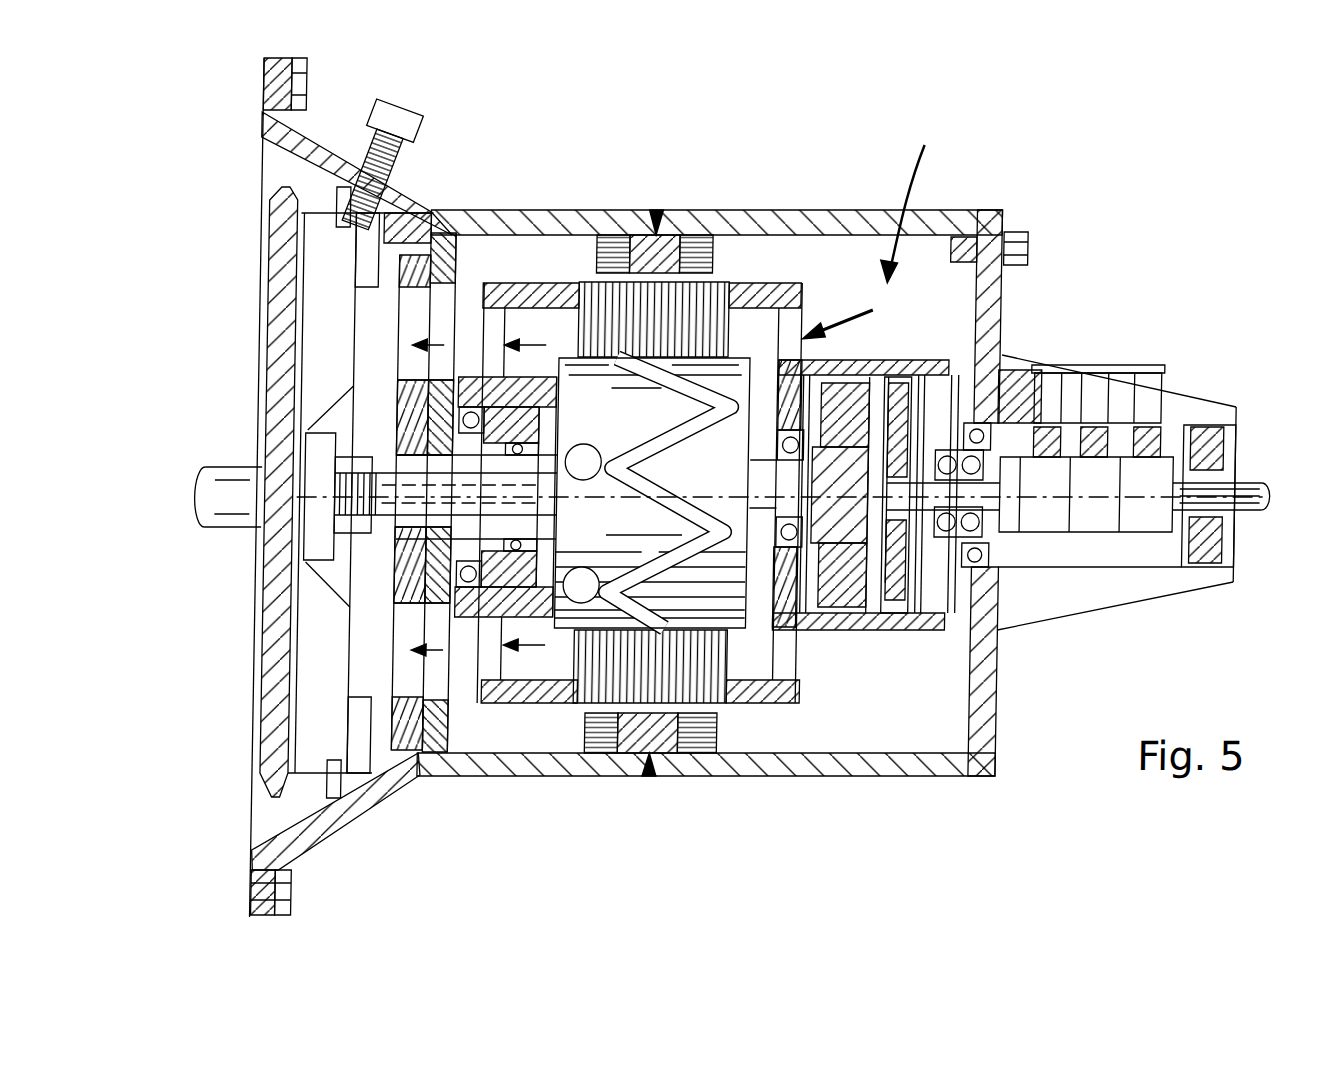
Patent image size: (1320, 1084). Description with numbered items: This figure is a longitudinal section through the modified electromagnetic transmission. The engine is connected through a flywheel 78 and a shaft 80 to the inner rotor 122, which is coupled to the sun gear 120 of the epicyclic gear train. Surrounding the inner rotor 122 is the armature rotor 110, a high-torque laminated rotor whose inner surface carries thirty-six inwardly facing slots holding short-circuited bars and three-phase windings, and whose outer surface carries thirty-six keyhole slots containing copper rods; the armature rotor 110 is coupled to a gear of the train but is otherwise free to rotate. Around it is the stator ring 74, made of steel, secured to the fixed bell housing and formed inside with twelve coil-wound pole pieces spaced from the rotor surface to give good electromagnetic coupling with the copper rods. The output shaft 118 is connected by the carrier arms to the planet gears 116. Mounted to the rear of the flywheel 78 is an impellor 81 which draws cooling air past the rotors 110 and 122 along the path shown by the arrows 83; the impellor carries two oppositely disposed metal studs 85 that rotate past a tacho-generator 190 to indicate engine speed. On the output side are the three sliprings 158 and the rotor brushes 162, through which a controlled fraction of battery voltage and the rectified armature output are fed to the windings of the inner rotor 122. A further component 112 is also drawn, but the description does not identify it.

The stator ring 74 is at (553, 210).
The flywheel 78 is at (280, 320).
The shaft 80 is at (425, 505).
The impellor 81 is at (331, 638).
The arrows 83 is at (446, 338).
The metal studs 85 is at (345, 210).
The armature rotor 110 is at (727, 278).
The bearing housing 112 is at (870, 365).
The planet gears 116 is at (873, 585).
The output shaft 118 is at (1278, 517).
The sun gear 120 is at (850, 467).
The inner rotor 122 is at (668, 423).
The sliprings 158 is at (1177, 440).
The rotor brushes 162 is at (540, 405).
The tacho-generator 190 is at (416, 125).